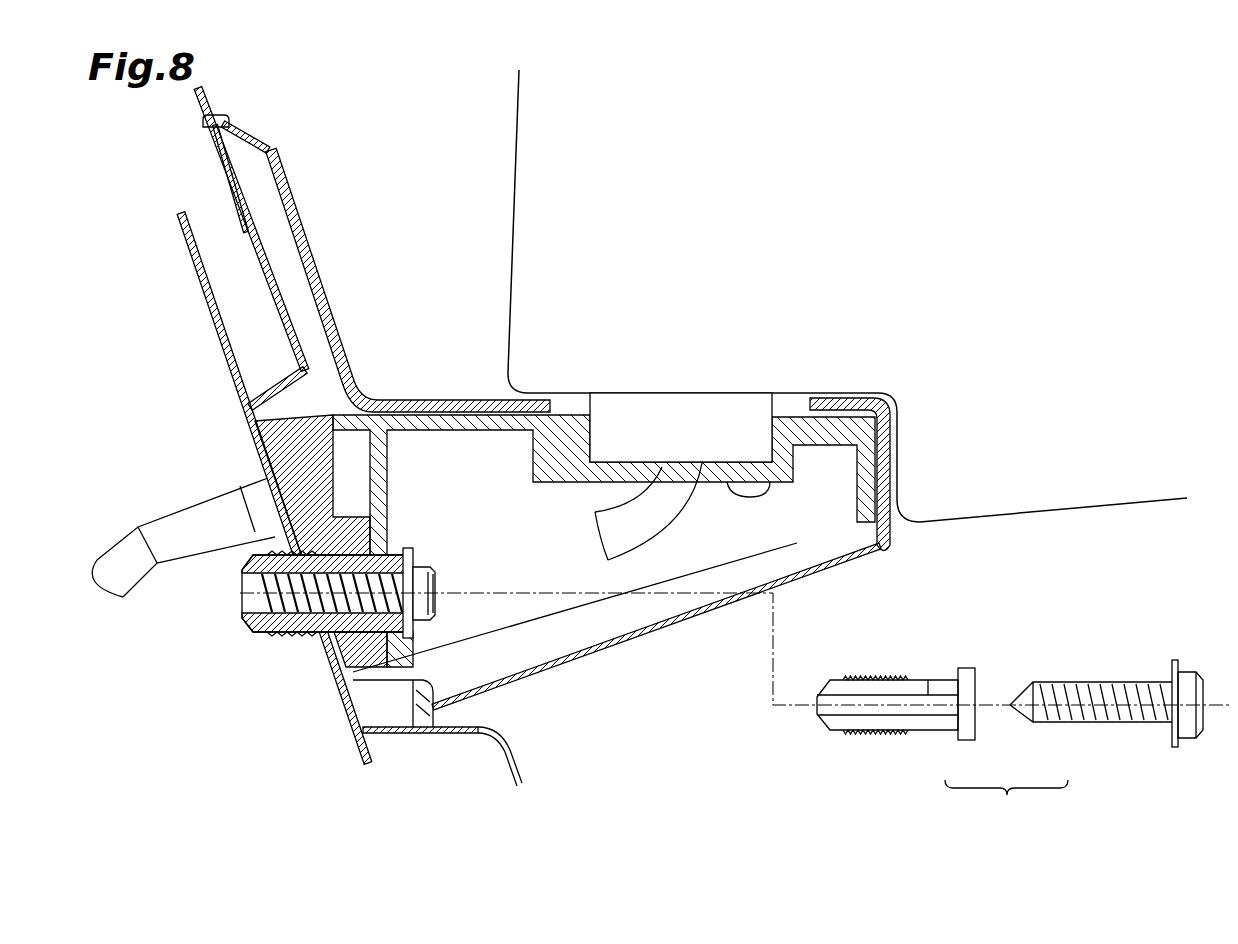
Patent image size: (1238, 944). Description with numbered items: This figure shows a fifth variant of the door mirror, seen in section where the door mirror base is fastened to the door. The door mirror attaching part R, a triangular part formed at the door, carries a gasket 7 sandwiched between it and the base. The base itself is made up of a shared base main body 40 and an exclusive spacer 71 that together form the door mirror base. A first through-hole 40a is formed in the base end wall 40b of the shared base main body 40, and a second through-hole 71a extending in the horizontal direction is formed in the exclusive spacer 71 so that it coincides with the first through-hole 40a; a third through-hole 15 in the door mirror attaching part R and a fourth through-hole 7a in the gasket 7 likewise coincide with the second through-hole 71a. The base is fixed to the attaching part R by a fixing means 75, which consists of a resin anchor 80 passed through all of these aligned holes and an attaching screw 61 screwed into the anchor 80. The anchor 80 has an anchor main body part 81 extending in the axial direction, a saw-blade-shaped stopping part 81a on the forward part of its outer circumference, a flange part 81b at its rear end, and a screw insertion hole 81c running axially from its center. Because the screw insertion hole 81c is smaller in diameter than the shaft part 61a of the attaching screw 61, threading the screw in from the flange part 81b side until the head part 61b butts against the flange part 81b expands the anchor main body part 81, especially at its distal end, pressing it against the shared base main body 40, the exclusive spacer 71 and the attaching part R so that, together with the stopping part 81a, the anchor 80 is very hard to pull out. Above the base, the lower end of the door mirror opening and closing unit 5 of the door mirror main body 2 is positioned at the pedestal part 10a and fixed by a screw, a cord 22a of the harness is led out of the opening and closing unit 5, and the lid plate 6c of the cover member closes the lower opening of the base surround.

The door mirror main body 2 is at (1040, 515).
The door mirror attaching part R is at (207, 319).
The door mirror opening and closing unit 5 is at (716, 402).
The lid plate 6c is at (658, 618).
The gasket 7 is at (262, 232).
The fourth through-hole 7a is at (332, 655).
The pedestal part 10a is at (752, 475).
The third through-hole 15 is at (330, 637).
The cord 22a is at (678, 523).
The shared base main body 40 is at (597, 603).
The first through-hole 40a is at (388, 547).
The base end wall 40b is at (383, 470).
The attaching screw 61 is at (1117, 733).
The shaft part 61a is at (255, 620).
The head part 61b is at (435, 568).
The exclusive spacer 71 is at (298, 488).
The second through-hole 71a is at (367, 553).
The fixing means 75 is at (1006, 800).
The resin anchor 80 is at (890, 737).
The anchor main body part 81 is at (890, 688).
The stopping part 81a is at (285, 637).
The flange part 81b is at (405, 550).
The screw insertion hole 81c is at (935, 695).